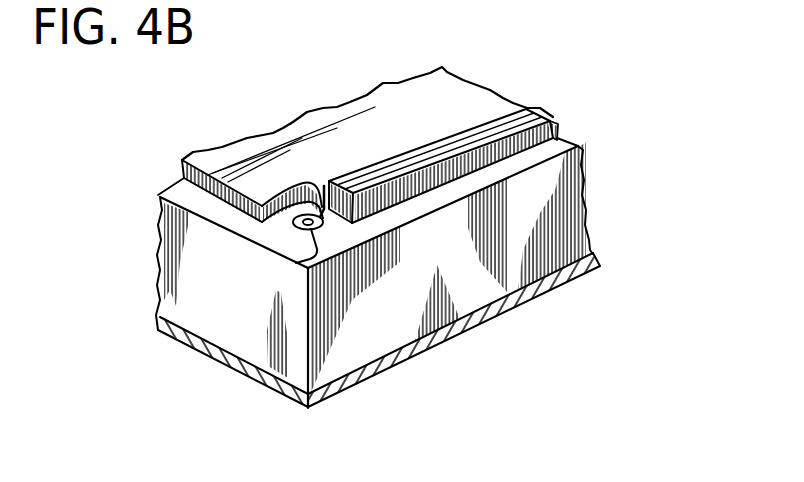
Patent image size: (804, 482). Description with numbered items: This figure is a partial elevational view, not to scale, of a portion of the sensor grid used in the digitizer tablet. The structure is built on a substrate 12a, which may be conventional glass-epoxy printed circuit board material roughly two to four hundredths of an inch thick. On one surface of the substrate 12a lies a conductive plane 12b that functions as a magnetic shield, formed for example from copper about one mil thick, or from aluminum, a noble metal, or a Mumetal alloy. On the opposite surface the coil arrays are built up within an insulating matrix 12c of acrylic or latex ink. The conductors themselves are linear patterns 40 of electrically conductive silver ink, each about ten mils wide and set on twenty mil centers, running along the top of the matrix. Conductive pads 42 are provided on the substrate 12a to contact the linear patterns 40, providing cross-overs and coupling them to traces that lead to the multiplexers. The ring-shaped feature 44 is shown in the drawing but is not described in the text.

The substrate 12a is at (587, 188).
The conductive plane 12b is at (593, 257).
The insulating matrix 12c is at (557, 121).
The linear patterns 40 is at (513, 104).
The conductive pads 42 is at (242, 234).
The contact ring 44 is at (300, 244).